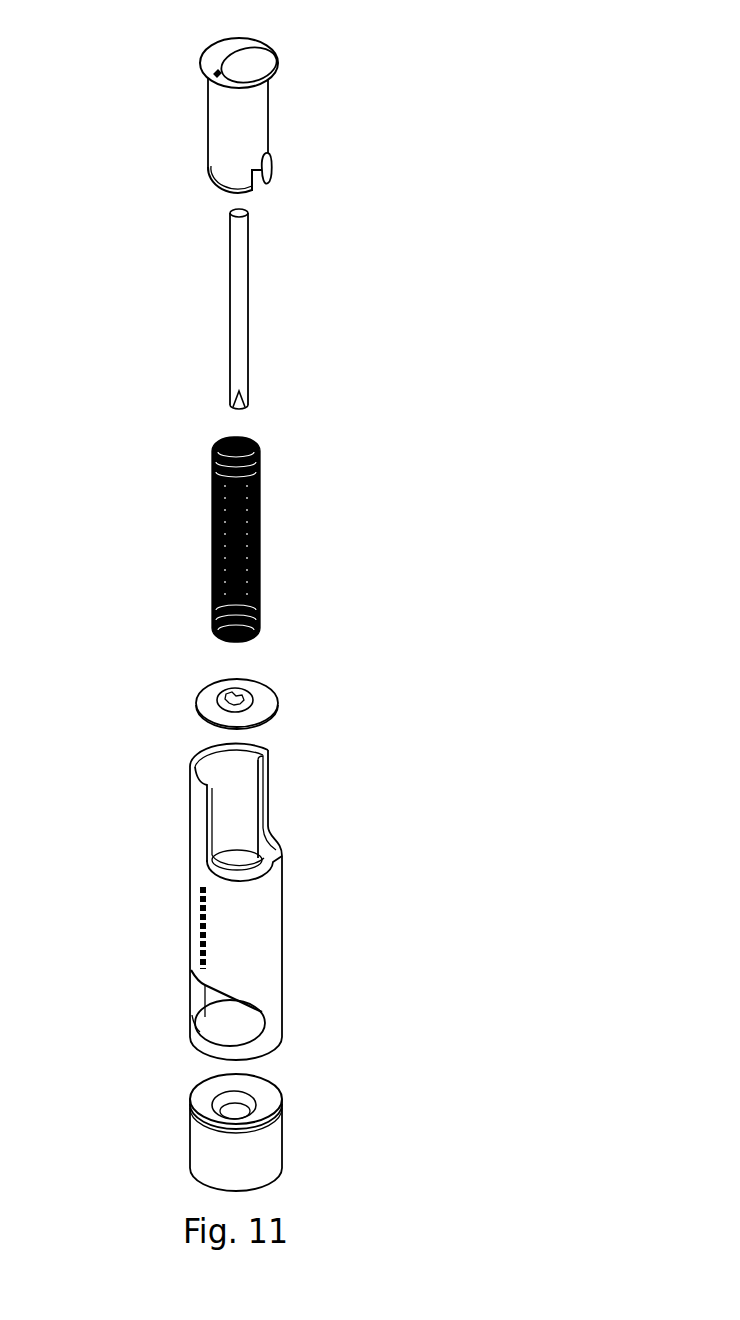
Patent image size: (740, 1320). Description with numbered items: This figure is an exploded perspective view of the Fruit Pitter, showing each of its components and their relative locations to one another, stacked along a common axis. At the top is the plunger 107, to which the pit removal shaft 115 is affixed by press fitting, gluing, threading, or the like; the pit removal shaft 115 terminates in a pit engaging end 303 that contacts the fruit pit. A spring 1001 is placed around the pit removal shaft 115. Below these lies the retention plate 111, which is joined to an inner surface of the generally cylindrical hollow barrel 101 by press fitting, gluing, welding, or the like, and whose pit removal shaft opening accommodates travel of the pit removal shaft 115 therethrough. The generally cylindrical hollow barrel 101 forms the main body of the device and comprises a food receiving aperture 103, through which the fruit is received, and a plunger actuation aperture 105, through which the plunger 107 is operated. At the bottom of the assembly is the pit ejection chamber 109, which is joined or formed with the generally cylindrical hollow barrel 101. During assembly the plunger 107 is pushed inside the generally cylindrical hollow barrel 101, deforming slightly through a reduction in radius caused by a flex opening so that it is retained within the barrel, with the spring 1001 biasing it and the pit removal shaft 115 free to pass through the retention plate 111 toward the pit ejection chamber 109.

The generally cylindrical hollow barrel 101 is at (282, 950).
The food receiving aperture 103 is at (213, 997).
The plunger actuation aperture 105 is at (273, 833).
The plunger 107 is at (258, 42).
The pit ejection chamber 109 is at (280, 1140).
The retention plate 111 is at (275, 693).
The pit removal shaft 115 is at (248, 312).
The pit engaging end 303 is at (245, 400).
The spring 1001 is at (260, 520).